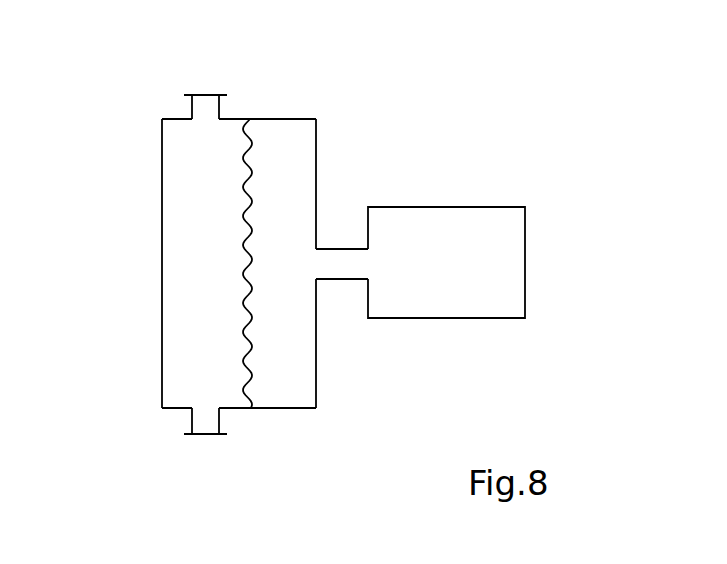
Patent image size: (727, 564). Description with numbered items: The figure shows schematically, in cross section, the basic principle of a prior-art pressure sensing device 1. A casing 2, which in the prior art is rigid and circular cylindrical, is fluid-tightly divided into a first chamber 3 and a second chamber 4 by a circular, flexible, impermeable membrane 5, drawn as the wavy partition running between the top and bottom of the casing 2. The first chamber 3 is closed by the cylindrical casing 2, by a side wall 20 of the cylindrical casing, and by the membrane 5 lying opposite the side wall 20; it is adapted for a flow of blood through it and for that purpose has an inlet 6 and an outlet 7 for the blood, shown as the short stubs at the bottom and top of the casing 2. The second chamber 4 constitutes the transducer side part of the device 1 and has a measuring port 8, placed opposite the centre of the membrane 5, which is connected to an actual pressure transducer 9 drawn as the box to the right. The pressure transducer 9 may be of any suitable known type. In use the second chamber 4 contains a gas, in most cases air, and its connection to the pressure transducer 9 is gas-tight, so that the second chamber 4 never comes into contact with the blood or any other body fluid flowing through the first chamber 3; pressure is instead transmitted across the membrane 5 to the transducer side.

The pressure sensing device 1 is at (352, 146).
The casing 2 is at (281, 119).
The first chamber 3 is at (178, 263).
The second chamber 4 is at (302, 385).
The membrane 5 is at (243, 160).
The inlet 6 is at (202, 430).
The outlet 7 is at (205, 105).
The measuring port 8 is at (319, 263).
The pressure transducer 9 is at (457, 207).
The side wall 20 is at (162, 373).